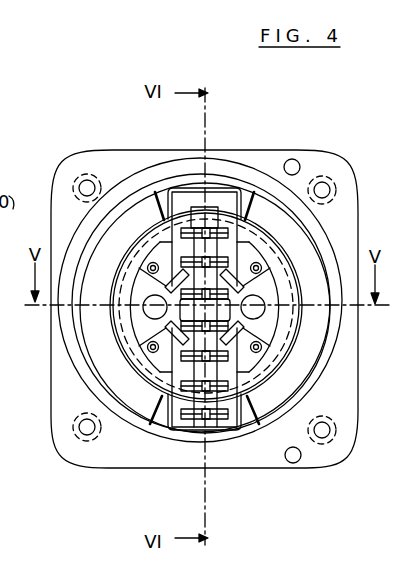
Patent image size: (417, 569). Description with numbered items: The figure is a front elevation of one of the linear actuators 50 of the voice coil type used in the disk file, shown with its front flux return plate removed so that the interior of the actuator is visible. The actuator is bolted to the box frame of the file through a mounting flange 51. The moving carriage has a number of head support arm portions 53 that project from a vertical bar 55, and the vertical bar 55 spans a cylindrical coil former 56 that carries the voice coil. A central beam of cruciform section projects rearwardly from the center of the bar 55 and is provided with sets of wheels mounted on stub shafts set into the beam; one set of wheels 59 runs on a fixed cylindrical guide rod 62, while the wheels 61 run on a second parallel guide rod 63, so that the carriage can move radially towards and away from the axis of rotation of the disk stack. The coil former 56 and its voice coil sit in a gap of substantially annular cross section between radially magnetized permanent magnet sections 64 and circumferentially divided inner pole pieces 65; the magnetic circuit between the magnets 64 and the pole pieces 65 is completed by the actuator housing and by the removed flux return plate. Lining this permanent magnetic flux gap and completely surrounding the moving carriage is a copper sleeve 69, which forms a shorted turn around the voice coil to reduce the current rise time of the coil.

The linear actuator 50 is at (125, 150).
The mounting flange 51 is at (115, 182).
The head support arm portions 53 is at (198, 432).
The vertical bar 55 is at (208, 207).
The cylindrical coil former 56 is at (287, 290).
The set of wheels 59 is at (150, 284).
The wheels 61 is at (266, 348).
The cam wedge 62 is at (168, 325).
The second parallel guide rod 63 is at (246, 330).
The radially magnetized permanent magnet sections 64 is at (155, 192).
The circumferentially divided inner pole pieces 65 is at (262, 260).
The copper sleeve 69 is at (254, 192).